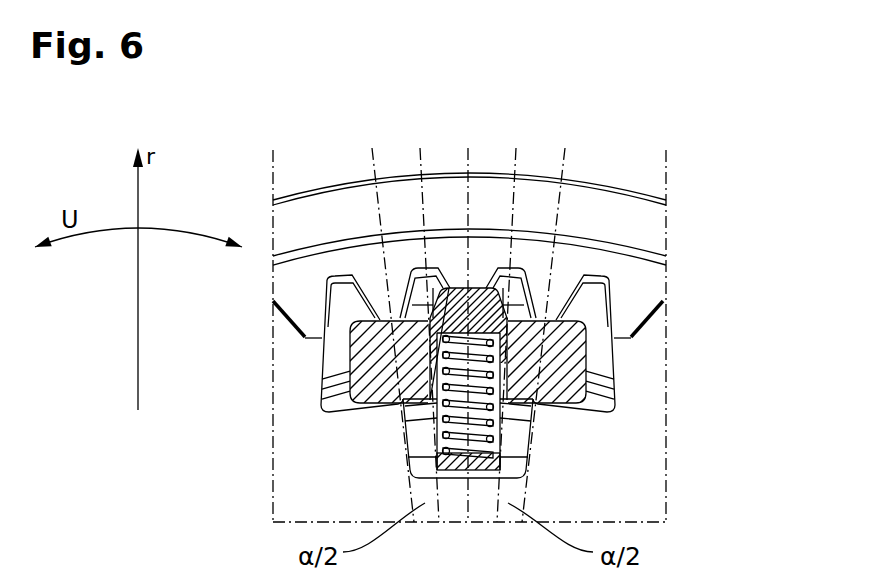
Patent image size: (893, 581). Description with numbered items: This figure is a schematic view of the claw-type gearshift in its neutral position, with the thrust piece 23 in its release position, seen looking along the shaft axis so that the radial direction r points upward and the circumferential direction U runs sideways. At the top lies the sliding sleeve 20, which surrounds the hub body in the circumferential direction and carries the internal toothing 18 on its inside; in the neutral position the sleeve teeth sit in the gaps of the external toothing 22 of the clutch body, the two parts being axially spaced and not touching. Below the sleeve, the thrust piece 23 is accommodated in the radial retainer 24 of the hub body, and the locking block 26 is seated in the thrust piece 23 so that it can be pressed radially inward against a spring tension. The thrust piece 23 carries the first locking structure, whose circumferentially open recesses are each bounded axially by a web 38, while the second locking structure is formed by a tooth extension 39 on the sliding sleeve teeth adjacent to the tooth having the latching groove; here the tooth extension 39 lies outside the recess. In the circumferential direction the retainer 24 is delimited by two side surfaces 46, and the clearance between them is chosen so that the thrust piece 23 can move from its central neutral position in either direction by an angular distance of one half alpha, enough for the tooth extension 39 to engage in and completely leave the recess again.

The internal toothing 18 is at (303, 313).
The sliding sleeve 20 is at (287, 218).
The external toothing 22 is at (593, 298).
The thrust piece 23 is at (563, 352).
The radial retainer 24 is at (322, 403).
The locking block 26 is at (460, 313).
The web 38 is at (413, 270).
The tooth extension 39 is at (524, 272).
The side surface 46 is at (322, 367).